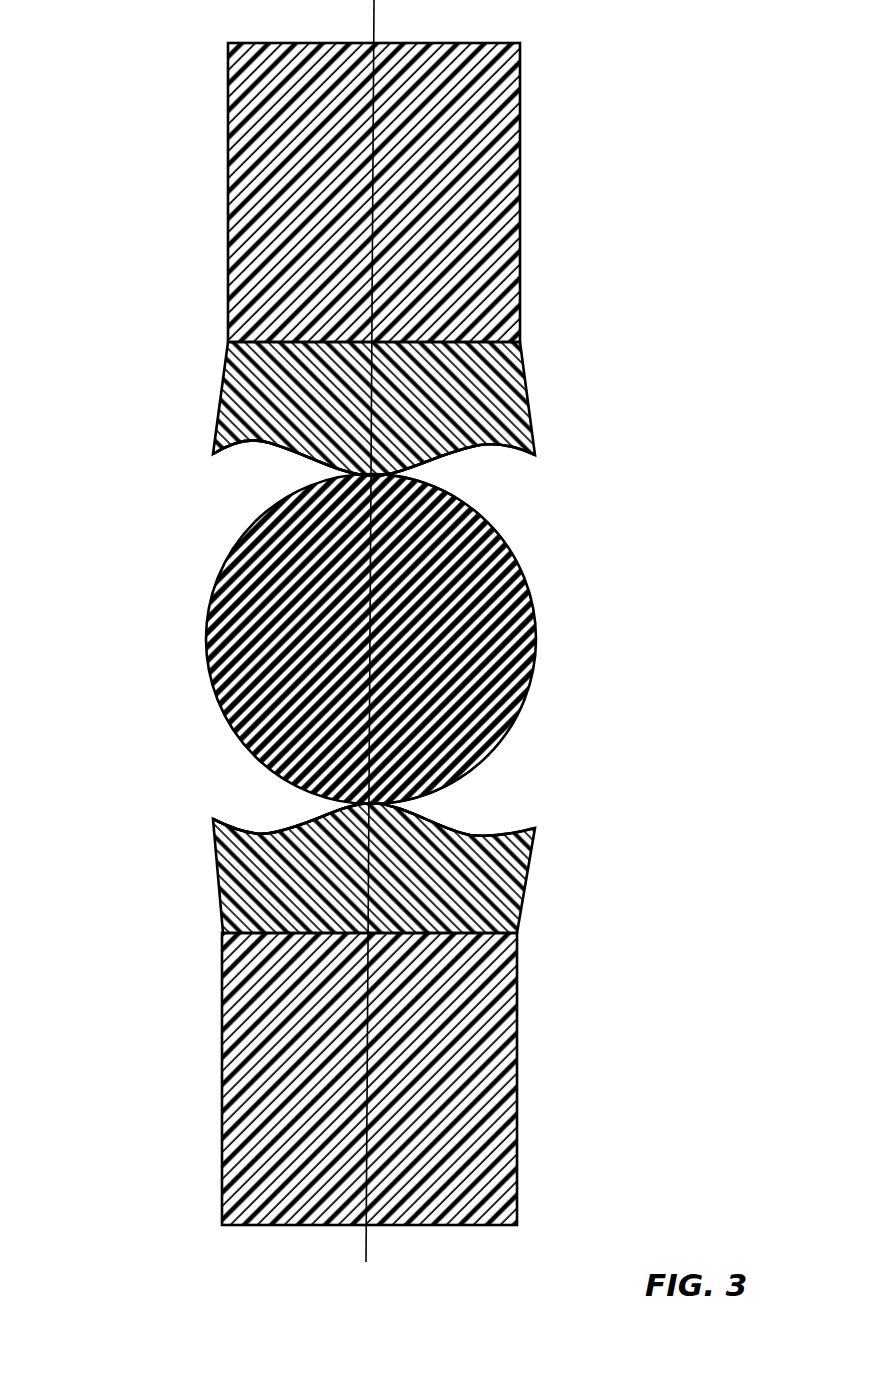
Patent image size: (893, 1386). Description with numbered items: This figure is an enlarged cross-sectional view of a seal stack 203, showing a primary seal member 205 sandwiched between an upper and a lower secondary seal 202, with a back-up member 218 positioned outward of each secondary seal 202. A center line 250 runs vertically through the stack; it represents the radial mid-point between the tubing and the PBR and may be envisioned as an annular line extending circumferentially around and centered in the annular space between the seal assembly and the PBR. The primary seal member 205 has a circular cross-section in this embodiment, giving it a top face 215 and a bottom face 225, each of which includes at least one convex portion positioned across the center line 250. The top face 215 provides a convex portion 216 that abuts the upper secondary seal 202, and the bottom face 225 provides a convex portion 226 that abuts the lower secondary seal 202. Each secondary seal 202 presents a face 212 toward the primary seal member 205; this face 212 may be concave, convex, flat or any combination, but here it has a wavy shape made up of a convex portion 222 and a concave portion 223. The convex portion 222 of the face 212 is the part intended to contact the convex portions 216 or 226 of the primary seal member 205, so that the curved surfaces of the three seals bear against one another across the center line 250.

The seal stack 203 is at (128, 291).
The center line 250 is at (375, 30).
The back-up member 218 is at (519, 170).
The secondary seal 202 is at (521, 400).
The face 212 is at (517, 455).
The primary seal member 205 is at (523, 594).
The convex portion 216 is at (398, 480).
The top face 215 is at (452, 487).
The convex portion 222 is at (320, 462).
The concave portion 223 is at (270, 445).
The bottom face 225 is at (443, 793).
The convex portion 226 is at (410, 798).